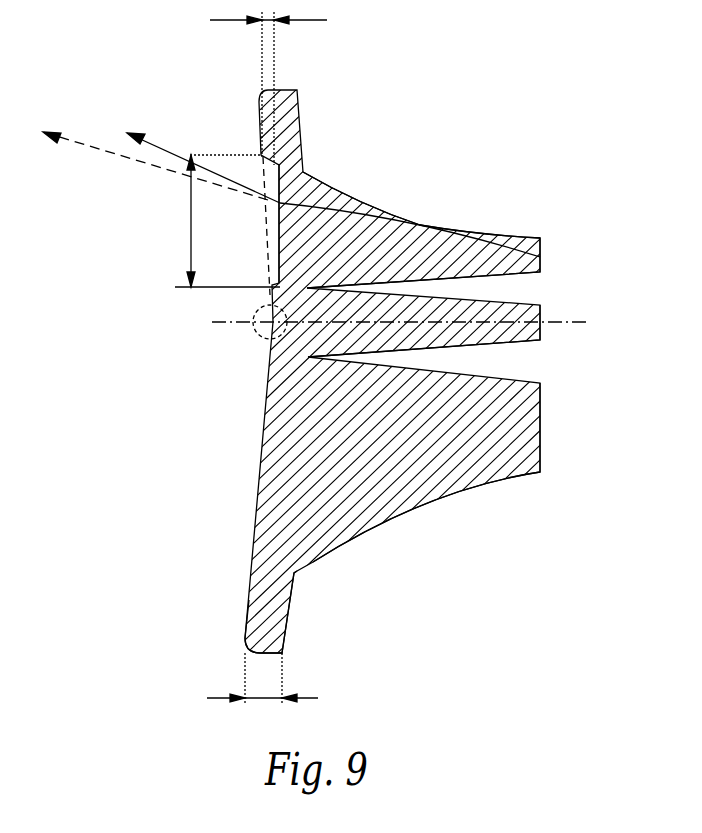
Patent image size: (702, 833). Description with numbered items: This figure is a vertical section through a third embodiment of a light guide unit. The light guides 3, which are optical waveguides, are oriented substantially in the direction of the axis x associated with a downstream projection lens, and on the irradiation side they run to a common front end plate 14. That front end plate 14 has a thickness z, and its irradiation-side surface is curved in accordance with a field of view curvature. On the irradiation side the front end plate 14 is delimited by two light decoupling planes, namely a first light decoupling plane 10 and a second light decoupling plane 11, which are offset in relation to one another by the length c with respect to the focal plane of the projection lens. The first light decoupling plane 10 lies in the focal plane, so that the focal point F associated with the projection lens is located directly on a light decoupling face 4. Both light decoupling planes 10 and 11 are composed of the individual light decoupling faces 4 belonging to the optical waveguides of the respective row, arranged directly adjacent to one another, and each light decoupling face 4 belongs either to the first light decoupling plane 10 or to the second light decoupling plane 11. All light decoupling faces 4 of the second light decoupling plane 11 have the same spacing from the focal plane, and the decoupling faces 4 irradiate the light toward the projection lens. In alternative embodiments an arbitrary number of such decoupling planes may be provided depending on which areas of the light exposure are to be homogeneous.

The light guides 3 is at (520, 243).
The light decoupling faces 4 is at (190, 210).
The first light decoupling plane 10 is at (267, 442).
The second light decoupling plane 11 is at (278, 247).
The front end plate 14 is at (258, 605).
The focal point F is at (270, 305).
The axis x is at (224, 322).
The length c is at (268, 82).
The thickness z is at (262, 679).